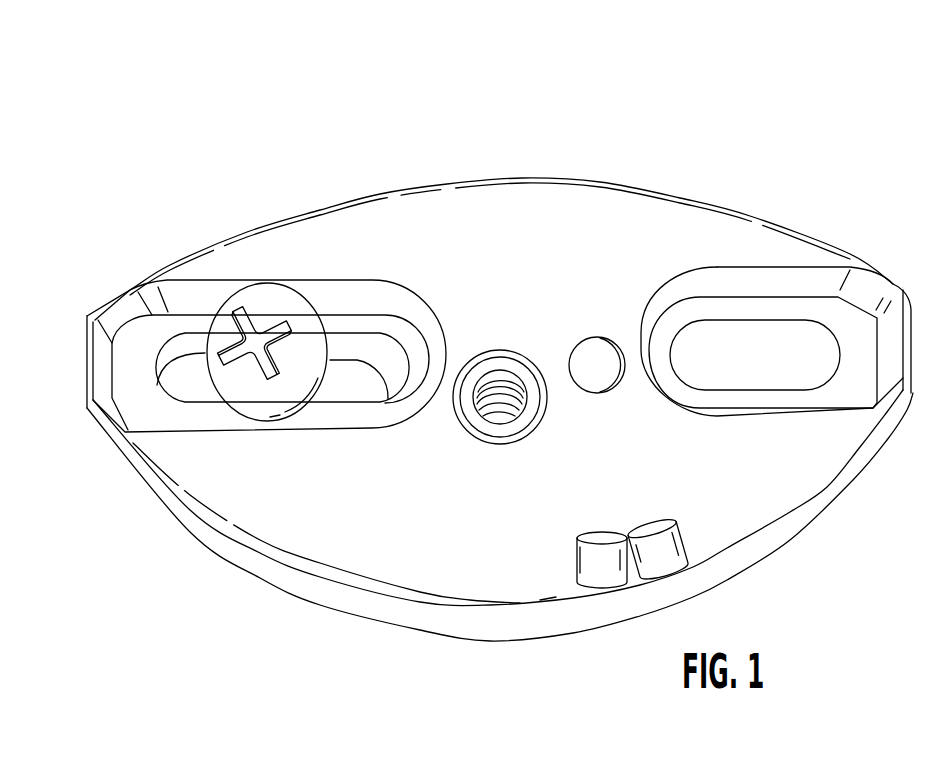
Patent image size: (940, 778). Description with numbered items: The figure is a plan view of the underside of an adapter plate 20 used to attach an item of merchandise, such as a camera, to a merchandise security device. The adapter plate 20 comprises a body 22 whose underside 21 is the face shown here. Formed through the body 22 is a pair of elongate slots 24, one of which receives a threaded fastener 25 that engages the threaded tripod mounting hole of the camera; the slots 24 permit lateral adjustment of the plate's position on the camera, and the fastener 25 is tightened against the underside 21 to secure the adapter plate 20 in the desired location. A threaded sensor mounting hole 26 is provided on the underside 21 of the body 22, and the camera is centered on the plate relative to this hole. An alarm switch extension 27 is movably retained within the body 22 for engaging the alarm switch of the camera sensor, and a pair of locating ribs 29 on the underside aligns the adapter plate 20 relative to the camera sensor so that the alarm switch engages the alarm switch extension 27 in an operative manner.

The adapter plate 20 is at (744, 158).
The underside 21 is at (732, 492).
The body 22 is at (373, 610).
The elongate slots 24 is at (183, 345).
The threaded fastener 25 is at (270, 302).
The threaded sensor mounting hole 26 is at (505, 393).
The alarm switch extension 27 is at (597, 350).
The locating ribs 29 is at (669, 572).